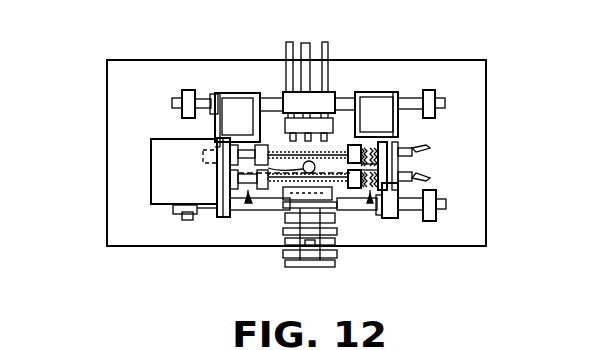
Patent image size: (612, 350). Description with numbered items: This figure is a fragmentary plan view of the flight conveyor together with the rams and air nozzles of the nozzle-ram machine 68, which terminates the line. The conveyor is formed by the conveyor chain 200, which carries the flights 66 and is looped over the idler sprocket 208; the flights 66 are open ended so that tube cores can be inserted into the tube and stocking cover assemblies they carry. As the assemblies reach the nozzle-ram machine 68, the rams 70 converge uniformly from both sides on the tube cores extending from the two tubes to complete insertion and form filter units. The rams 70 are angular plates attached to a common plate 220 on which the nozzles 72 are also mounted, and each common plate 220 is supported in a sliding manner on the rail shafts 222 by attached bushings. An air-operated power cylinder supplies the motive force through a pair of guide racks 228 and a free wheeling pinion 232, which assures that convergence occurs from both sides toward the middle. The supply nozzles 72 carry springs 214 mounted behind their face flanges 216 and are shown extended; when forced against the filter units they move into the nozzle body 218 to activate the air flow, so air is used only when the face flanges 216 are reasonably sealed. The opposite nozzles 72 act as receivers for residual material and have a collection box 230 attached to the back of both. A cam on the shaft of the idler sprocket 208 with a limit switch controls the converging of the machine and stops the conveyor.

The nozzle-ram machine 68 is at (78, 68).
The rams 70 is at (238, 93).
The nozzles 72 is at (248, 204).
The flights 66 is at (344, 92).
The conveyor chain 200 is at (305, 43).
The idler sprocket 208 is at (310, 268).
The springs 214 is at (370, 131).
The face flanges 216 is at (273, 100).
The nozzle body 218 is at (413, 153).
The common plate 220 is at (223, 218).
The rail shafts 222 is at (445, 103).
The guide racks 228 is at (345, 100).
The collection box 230 is at (162, 192).
The free wheeling pinion 232 is at (338, 152).